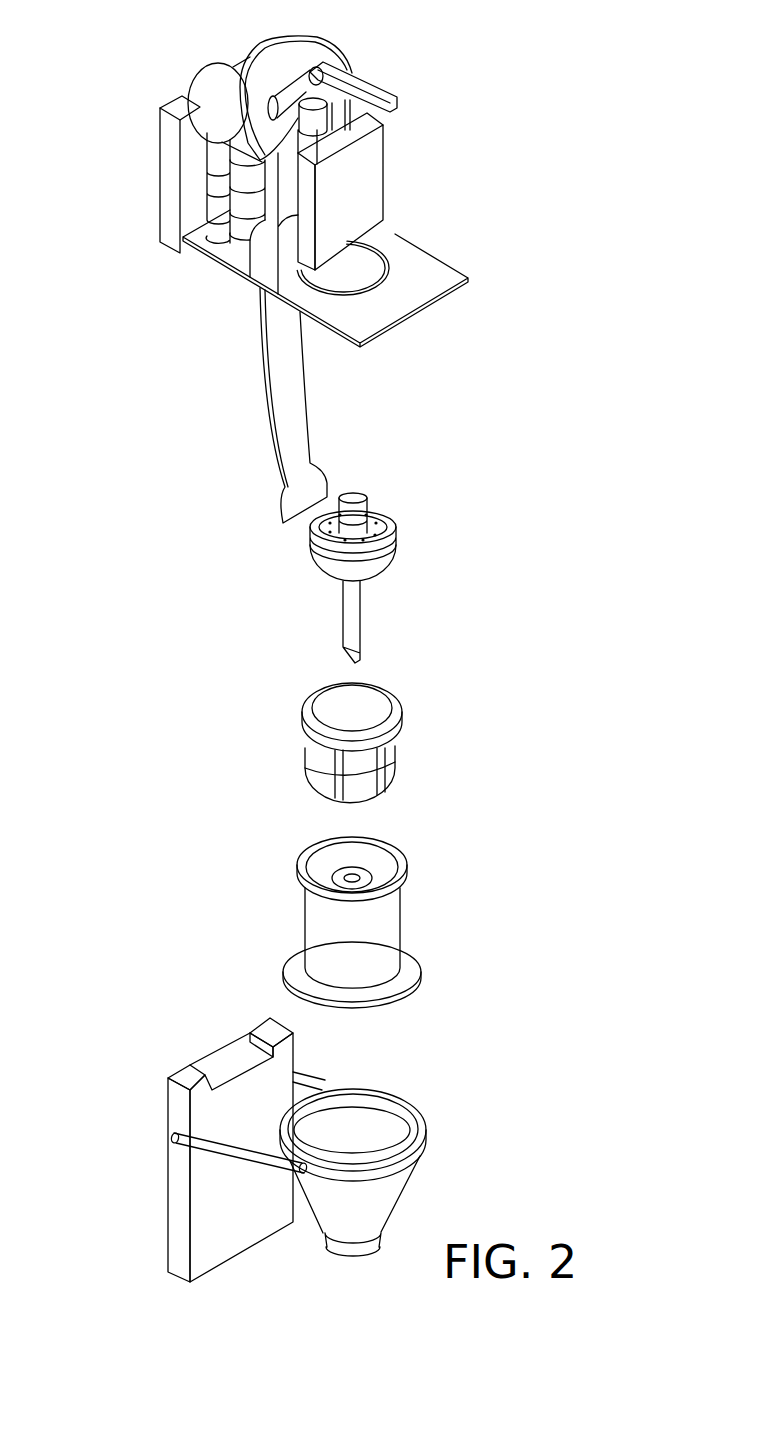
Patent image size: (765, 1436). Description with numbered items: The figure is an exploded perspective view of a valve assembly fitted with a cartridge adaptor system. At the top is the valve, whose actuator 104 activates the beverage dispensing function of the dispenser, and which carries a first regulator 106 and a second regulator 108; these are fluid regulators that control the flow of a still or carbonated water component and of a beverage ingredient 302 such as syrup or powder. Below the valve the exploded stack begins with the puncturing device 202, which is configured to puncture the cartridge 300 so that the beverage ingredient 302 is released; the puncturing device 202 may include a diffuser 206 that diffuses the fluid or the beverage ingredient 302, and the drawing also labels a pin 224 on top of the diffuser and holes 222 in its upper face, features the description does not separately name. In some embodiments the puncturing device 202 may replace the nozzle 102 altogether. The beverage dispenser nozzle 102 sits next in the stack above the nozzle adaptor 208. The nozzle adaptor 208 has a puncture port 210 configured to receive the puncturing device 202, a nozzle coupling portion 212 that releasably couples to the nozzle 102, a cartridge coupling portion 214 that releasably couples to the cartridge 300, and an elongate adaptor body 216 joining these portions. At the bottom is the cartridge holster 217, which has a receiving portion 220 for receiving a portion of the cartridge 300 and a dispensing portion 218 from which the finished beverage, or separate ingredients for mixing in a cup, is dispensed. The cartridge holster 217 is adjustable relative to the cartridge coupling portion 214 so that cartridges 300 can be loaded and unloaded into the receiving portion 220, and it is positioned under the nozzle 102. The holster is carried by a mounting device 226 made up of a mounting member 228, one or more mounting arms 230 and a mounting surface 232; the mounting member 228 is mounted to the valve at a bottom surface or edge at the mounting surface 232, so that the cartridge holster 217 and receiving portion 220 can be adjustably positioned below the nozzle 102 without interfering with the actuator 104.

The nozzle 102 is at (402, 732).
The actuator 104 is at (306, 405).
The first regulator 106 is at (222, 117).
The second regulator 108 is at (270, 45).
The puncturing device 202 is at (378, 561).
The diffuser 206 is at (393, 520).
The nozzle adaptor 208 is at (365, 900).
The puncture port 210 is at (352, 878).
The nozzle coupling portion 212 is at (407, 870).
The cartridge coupling portion 214 is at (420, 972).
The elongate adaptor body 216 is at (305, 910).
The cartridge holster 217 is at (420, 1169).
The dispensing portion 218 is at (338, 1252).
The receiving portion 220 is at (415, 1108).
The holes 222 is at (330, 533).
The pin 224 is at (352, 498).
The mounting device 226 is at (243, 1122).
The mounting member 228 is at (263, 1128).
The mounting arm 230 is at (307, 1085).
The mounting surface 232 is at (233, 1058).
The cartridge 300 is at (383, 1128).
The beverage ingredient 302 is at (373, 1152).